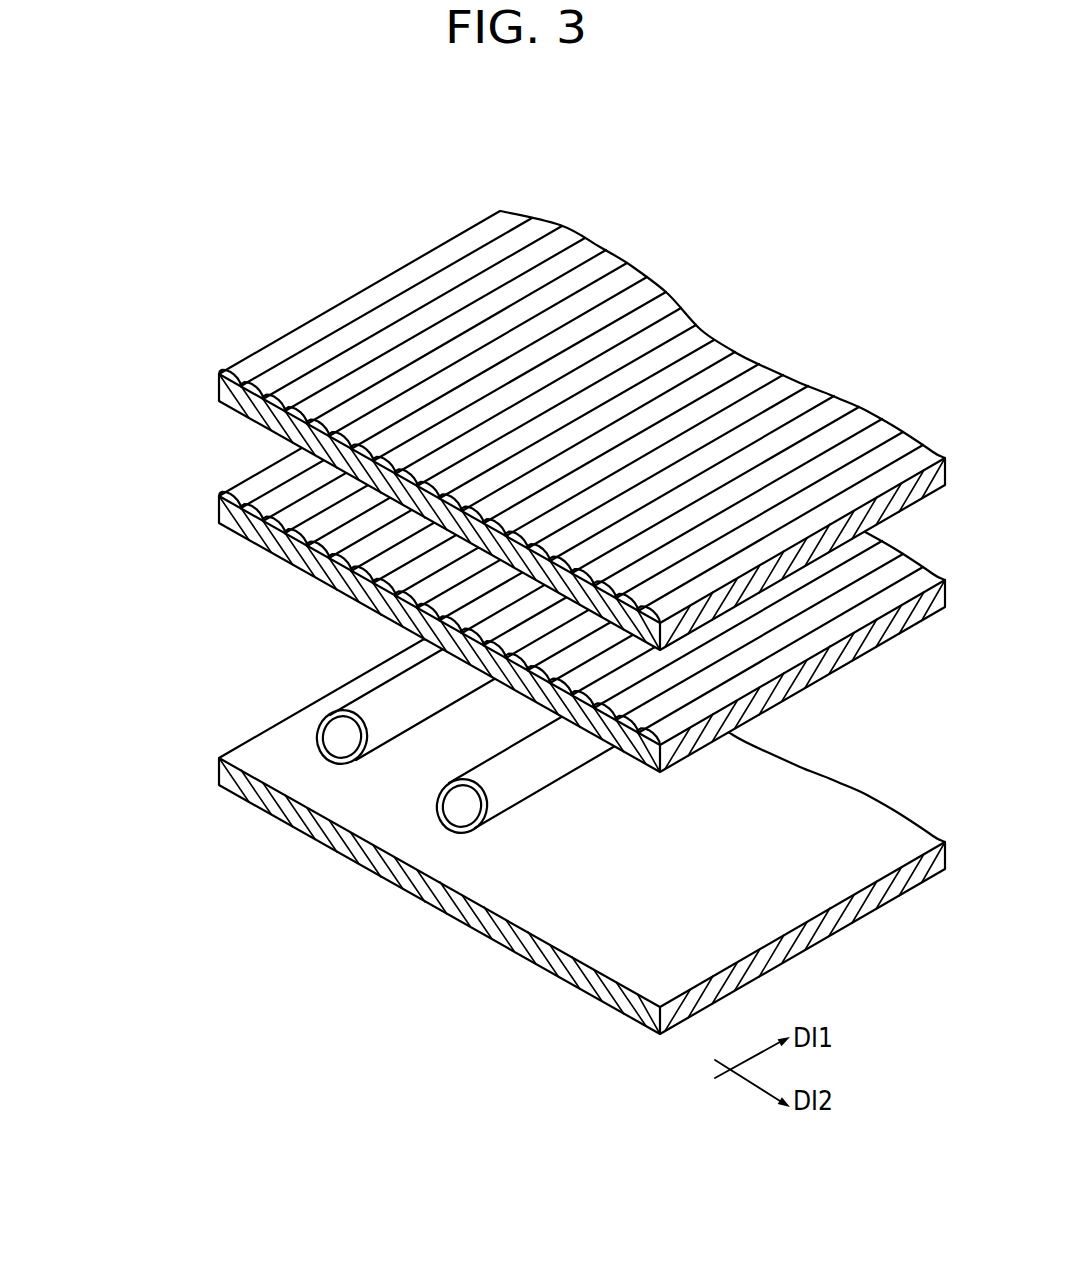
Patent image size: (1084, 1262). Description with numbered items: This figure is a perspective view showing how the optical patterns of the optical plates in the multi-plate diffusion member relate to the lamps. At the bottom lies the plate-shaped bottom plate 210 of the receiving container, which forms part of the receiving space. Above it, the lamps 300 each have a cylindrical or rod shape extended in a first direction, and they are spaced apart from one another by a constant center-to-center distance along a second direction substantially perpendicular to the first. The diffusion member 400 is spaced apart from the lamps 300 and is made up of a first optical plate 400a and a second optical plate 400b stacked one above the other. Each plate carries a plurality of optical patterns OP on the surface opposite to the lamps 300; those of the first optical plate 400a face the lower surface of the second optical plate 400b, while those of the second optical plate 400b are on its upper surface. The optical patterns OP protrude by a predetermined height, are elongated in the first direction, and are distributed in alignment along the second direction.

The bottom plate 210 is at (408, 840).
The lamps 300 is at (340, 686).
The diffusion member 400 is at (102, 357).
The first optical plate 400a is at (525, 552).
The second optical plate 400b is at (205, 385).
The optical patterns OP is at (710, 582).